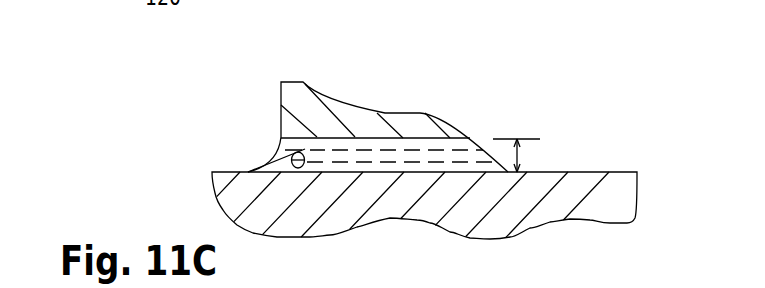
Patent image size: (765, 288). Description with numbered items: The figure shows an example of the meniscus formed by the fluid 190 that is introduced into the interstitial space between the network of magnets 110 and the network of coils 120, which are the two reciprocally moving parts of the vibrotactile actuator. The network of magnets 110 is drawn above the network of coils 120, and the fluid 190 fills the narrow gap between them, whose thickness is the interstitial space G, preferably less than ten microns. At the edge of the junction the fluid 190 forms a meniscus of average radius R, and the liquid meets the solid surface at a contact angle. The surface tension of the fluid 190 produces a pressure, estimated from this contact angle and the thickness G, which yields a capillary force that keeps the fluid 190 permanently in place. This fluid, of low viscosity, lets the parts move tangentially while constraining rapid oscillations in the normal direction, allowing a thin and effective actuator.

The network of magnets 110 is at (297, 98).
The network of coils 120 is at (575, 187).
The fluid 190 is at (373, 142).
The average radius of the meniscus R is at (271, 152).
The thickness of the interstitial space G is at (520, 155).